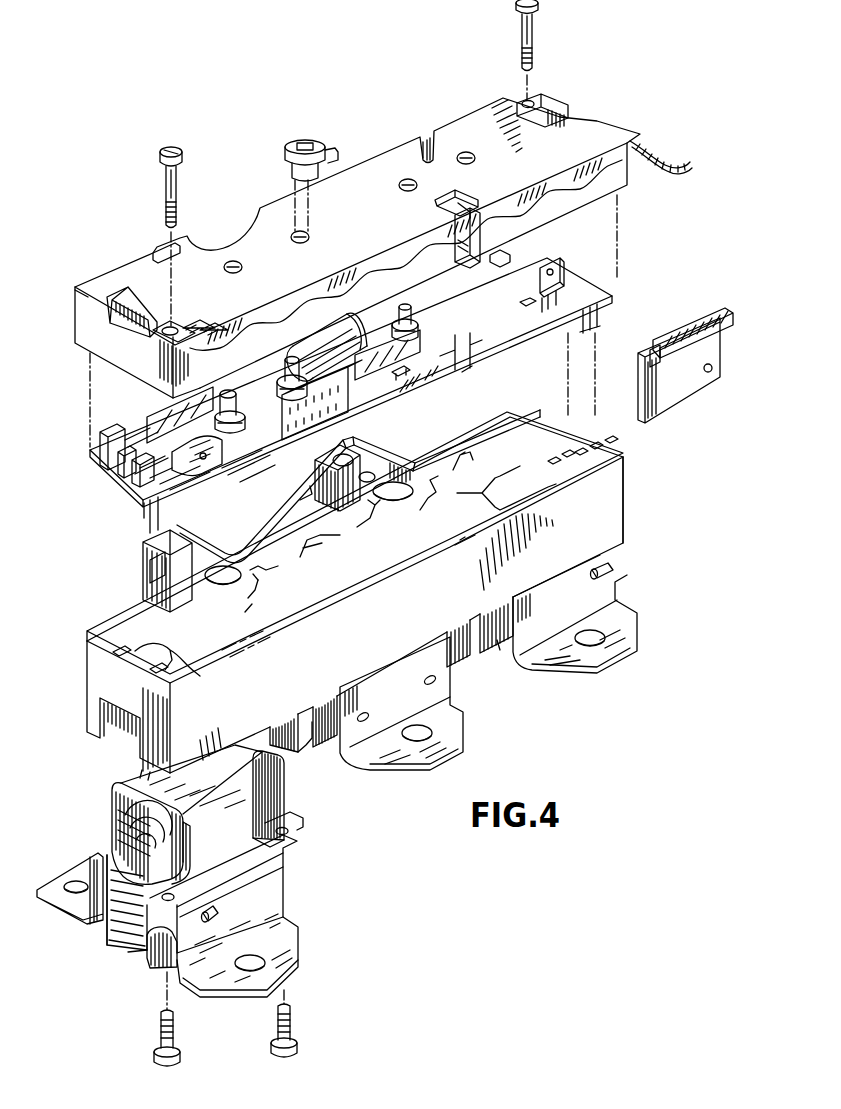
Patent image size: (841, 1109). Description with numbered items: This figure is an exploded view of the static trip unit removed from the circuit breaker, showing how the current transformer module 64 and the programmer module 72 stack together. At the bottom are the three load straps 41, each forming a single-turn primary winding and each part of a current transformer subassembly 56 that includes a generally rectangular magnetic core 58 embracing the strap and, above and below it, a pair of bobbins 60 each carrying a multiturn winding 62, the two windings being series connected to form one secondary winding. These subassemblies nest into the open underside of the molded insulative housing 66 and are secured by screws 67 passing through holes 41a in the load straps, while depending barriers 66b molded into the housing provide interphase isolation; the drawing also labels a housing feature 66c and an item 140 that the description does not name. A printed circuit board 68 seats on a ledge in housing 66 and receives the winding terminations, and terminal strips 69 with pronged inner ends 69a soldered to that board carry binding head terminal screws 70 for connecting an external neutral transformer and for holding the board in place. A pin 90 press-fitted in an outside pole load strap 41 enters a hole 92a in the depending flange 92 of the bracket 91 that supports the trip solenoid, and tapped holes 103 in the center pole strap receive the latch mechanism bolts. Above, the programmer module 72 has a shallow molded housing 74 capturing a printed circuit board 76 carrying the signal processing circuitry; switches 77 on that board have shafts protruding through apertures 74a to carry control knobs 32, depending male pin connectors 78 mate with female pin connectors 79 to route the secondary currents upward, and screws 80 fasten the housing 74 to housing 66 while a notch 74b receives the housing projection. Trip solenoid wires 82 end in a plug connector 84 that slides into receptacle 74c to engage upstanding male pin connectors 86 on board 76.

The control knob 32 is at (303, 137).
The load strap 41 is at (632, 634).
The hole 41a is at (282, 828).
The current transformer subassembly 56 is at (333, 756).
The magnetic core 58 is at (152, 955).
The bobbin 60 is at (278, 788).
The multiturn winding 62 is at (232, 778).
The current transformer module 64 is at (636, 494).
The housing 66 is at (355, 615).
The depending barrier 66b is at (290, 728).
The housing post 66c is at (146, 569).
The screw 67 is at (160, 1033).
The printed circuit board 68 is at (355, 546).
The terminal strip 69 is at (200, 560).
The pronged inner end 69a is at (310, 482).
The binding head terminal screw 70 is at (363, 462).
The programmer module 72 is at (70, 354).
The housing 74 is at (357, 270).
The aperture 74a is at (300, 243).
The notch 74b is at (160, 252).
The receptacle 74c is at (462, 196).
The printed circuit board 76 is at (102, 470).
The switch 77 is at (282, 378).
The male pin connector 78 is at (147, 518).
The female pin connector 79 is at (160, 658).
The screw 80 is at (178, 178).
The wire 82 is at (663, 172).
The plug connector 84 is at (476, 237).
The male pin connector 86 is at (466, 352).
The pin 90 is at (608, 567).
The bracket 91 is at (678, 318).
The depending flange 92 is at (664, 406).
The hole 92a is at (708, 373).
The tapped hole 103 is at (415, 686).
The connector 140 is at (500, 252).